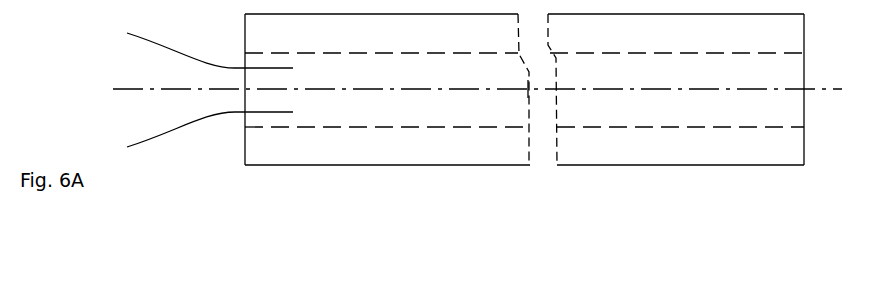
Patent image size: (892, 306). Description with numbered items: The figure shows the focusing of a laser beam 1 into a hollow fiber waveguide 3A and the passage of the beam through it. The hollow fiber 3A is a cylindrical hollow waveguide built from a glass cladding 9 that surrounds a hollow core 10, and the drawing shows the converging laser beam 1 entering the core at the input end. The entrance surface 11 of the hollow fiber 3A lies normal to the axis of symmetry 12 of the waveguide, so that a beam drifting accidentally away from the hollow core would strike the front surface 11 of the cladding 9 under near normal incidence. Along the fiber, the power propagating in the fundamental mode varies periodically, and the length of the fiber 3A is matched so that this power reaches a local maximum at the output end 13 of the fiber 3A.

The laser beam 1 is at (180, 128).
The glass cladding 9 is at (367, 147).
The hollow core 10 is at (487, 112).
The entrance surface 11 is at (243, 148).
The axis of symmetry 12 is at (825, 89).
The output end 13 is at (804, 145).
The hollow fiber waveguide 3A is at (408, 177).